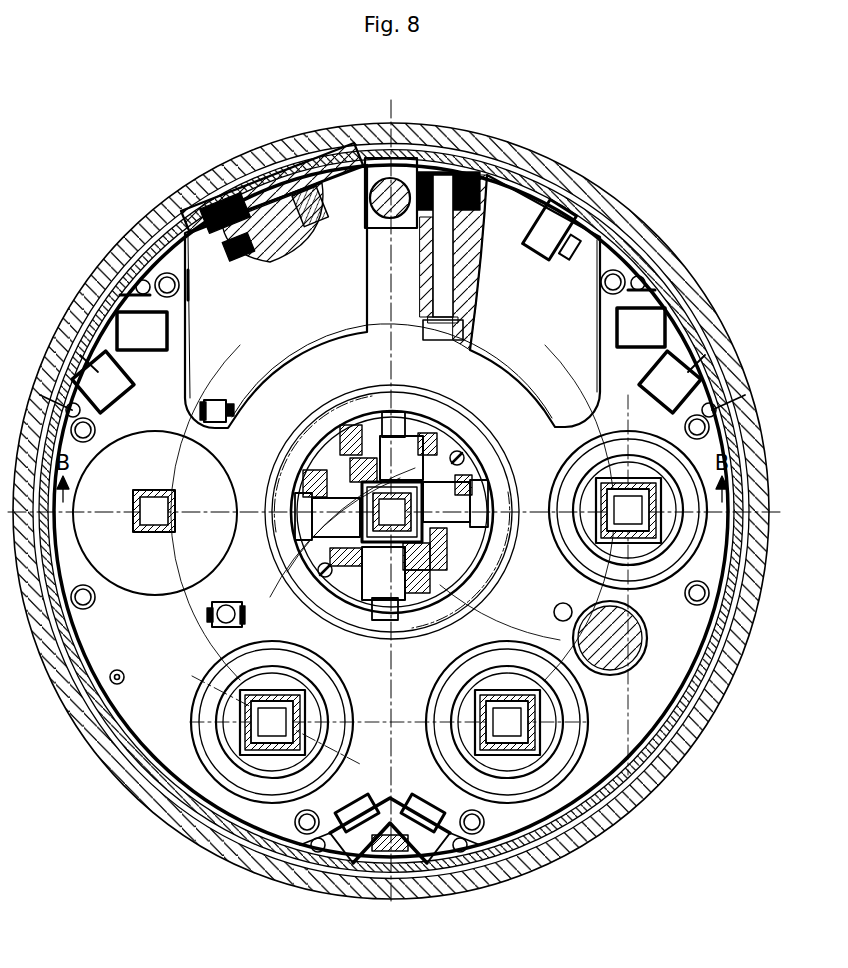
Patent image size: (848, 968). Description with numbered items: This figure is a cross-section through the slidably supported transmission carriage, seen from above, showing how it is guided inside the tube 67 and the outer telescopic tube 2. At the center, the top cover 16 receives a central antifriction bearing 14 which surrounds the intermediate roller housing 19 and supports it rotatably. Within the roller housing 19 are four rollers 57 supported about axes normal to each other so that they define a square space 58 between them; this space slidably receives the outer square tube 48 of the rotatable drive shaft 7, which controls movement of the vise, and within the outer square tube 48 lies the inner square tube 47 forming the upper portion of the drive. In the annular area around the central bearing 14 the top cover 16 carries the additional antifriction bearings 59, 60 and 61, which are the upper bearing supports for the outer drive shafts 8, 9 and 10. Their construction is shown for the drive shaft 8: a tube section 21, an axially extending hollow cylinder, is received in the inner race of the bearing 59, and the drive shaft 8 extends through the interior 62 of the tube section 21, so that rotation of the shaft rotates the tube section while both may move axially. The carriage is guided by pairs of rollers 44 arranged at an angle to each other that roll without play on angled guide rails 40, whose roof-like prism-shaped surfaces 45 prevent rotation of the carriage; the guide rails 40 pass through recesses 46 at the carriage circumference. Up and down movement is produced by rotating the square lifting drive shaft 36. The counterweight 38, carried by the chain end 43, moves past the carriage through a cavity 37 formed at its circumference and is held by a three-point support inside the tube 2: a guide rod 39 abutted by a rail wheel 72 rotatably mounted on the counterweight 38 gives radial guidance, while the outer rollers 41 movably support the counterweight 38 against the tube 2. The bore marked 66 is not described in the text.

The outer telescopic tube 2 is at (215, 832).
The rotatable drive shaft 7 is at (440, 455).
The outer drive shaft 8 is at (580, 538).
The outer drive shaft 9 is at (505, 695).
The outer drive shaft 10 is at (312, 695).
The central antifriction bearing 14 is at (413, 418).
The top cover 16 is at (194, 639).
The intermediate roller housing 19 is at (455, 575).
The tube section 21 is at (673, 538).
The lifting drive shaft 36 is at (152, 530).
The cavity 37 is at (552, 425).
The counterweight 38 is at (276, 296).
The guide rod 39 is at (395, 178).
The guide rail 40 is at (150, 328).
The outer roller 41 is at (252, 250).
The chain end 43 is at (230, 425).
The roller 44 is at (120, 372).
The prism-shaped surface 45 is at (410, 865).
The recess 46 is at (700, 378).
The inner square tube 47 is at (282, 548).
The outer square tube 48 is at (300, 575).
The roller 57 is at (391, 516).
The square space 58 is at (355, 415).
The antifriction bearing 59 is at (652, 572).
The antifriction bearing 60 is at (588, 714).
The antifriction bearing 61 is at (338, 713).
The interior 62 is at (620, 455).
The bore 66 is at (155, 513).
The tube 67 is at (150, 798).
The rail wheel 72 is at (495, 248).